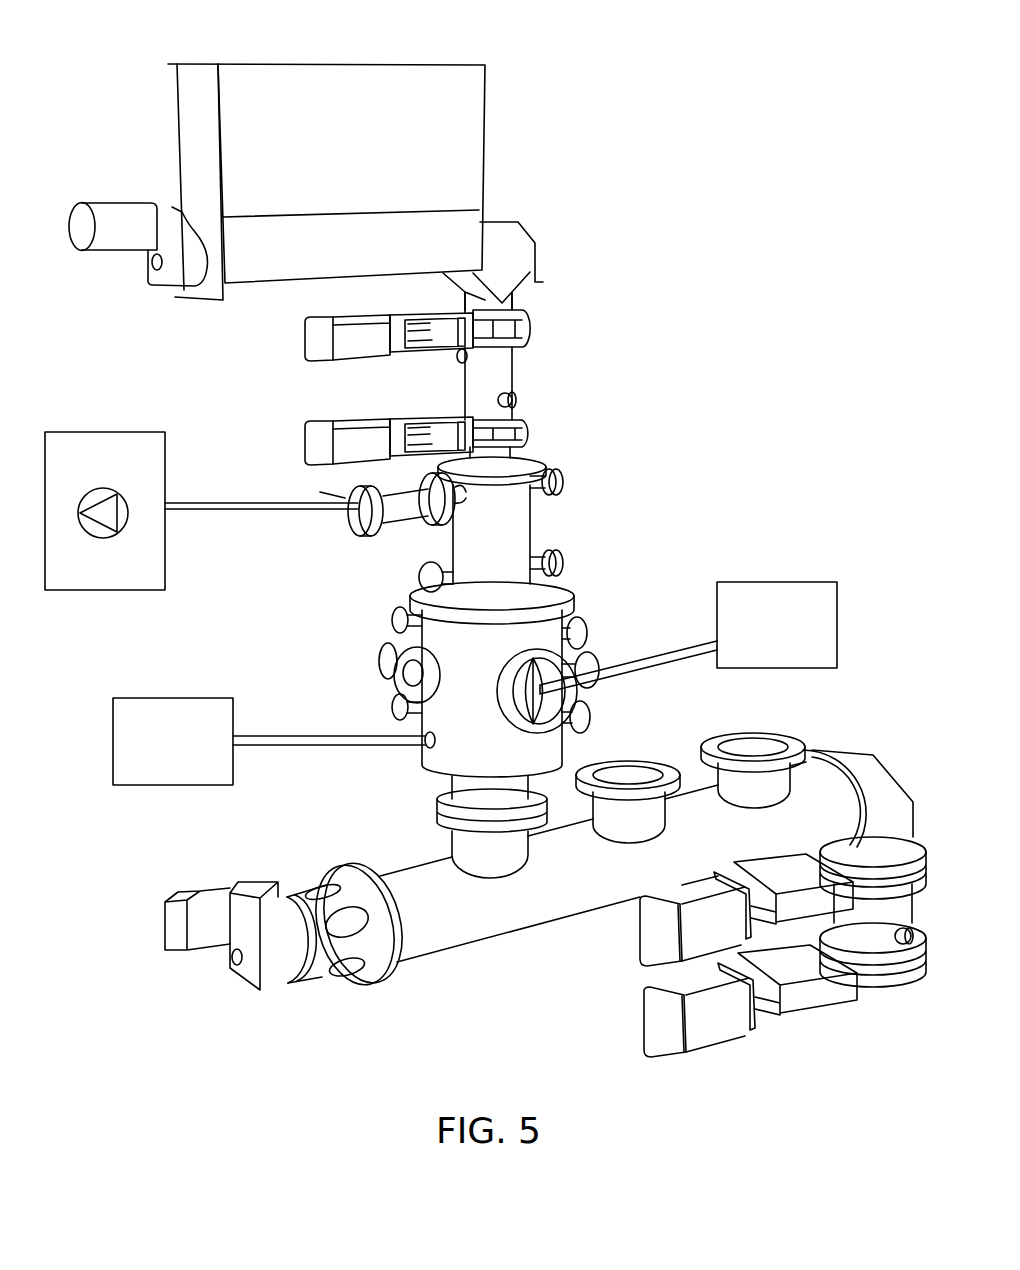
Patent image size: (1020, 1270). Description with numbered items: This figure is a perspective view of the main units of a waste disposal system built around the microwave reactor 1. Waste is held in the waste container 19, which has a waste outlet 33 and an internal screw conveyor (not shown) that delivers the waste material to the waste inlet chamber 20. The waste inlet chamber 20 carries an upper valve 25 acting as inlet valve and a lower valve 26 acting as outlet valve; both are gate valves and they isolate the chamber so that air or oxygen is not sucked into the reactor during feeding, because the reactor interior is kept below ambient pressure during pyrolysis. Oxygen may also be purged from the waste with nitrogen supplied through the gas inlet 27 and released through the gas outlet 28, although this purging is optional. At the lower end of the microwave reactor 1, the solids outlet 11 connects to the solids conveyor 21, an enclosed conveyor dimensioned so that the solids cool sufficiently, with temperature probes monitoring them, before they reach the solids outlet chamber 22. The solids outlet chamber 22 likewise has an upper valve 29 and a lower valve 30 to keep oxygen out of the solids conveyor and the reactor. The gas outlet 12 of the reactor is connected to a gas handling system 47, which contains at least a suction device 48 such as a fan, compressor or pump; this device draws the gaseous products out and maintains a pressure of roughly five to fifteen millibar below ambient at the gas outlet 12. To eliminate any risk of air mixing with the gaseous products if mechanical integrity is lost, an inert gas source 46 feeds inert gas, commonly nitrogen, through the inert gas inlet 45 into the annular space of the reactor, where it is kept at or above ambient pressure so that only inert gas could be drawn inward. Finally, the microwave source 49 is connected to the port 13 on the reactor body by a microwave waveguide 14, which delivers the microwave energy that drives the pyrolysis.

The microwave reactor 1 is at (330, 656).
The solids outlet 11 is at (465, 790).
The gas outlet 12 is at (361, 527).
The port 13 is at (565, 640).
The microwave waveguide 14 is at (690, 647).
The waste container 19 is at (492, 136).
The waste inlet chamber 20 is at (528, 369).
The solids conveyor 21 is at (508, 947).
The solids outlet chamber 22 is at (932, 903).
The upper valve 25 is at (310, 336).
The lower valve 26 is at (315, 448).
The gas inlet 27 is at (517, 400).
The gas outlet 28 is at (458, 358).
The upper valve 29 is at (655, 932).
The lower valve 30 is at (665, 1025).
The waste outlet 33 is at (497, 300).
The inert gas inlet 45 is at (426, 735).
The inert gas source 46 is at (154, 759).
The gas handling system 47 is at (75, 426).
The suction device 48 is at (101, 538).
The microwave source 49 is at (759, 641).